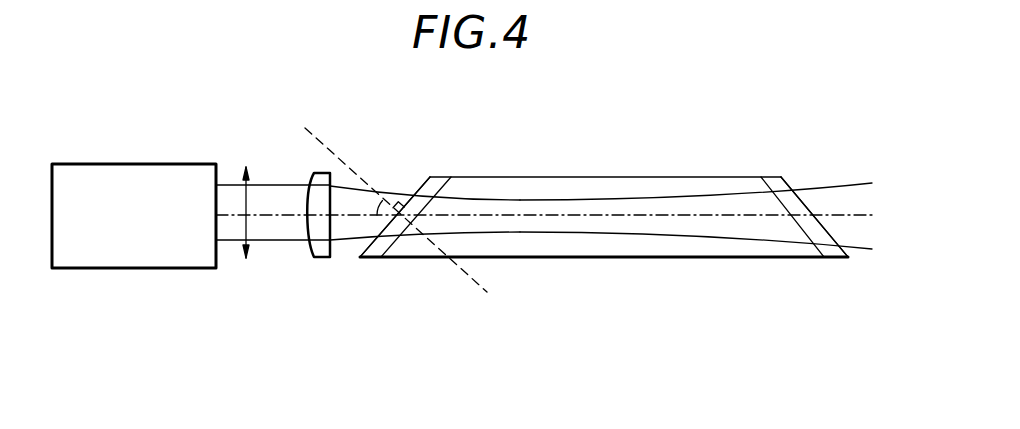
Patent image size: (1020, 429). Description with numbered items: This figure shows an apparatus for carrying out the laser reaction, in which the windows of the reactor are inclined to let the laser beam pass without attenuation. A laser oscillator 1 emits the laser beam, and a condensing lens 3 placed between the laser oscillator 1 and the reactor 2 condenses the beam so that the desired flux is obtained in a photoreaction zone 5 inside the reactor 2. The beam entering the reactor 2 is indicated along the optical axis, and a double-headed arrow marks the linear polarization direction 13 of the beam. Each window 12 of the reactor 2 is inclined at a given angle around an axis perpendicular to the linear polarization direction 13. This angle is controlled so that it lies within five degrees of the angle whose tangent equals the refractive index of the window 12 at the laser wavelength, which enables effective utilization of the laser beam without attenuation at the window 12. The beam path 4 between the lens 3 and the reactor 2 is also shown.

The laser oscillator 1 is at (97, 268).
The reactor 2 is at (572, 258).
The condensing lens 3 is at (312, 172).
The laser beam 4 is at (292, 243).
The photoreaction zone 5 is at (593, 193).
The window 12 is at (433, 177).
The linear polarization direction 13 is at (250, 247).